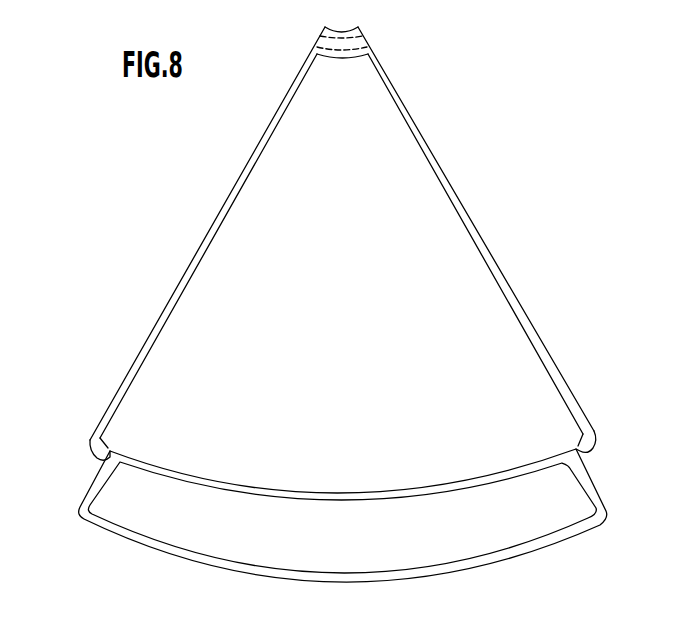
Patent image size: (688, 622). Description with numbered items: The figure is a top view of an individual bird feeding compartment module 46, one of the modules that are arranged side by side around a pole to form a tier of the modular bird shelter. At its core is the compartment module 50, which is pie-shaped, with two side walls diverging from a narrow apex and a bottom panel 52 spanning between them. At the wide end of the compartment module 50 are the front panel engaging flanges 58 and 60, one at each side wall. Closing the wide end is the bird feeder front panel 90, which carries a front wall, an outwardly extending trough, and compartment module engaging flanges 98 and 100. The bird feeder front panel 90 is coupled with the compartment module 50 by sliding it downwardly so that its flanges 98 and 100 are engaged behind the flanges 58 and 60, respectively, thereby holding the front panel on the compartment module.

The bird feeding compartment module 46 is at (519, 168).
The compartment module 50 is at (521, 292).
The bottom panel 52 is at (347, 293).
The front panel engaging flange 58 is at (596, 455).
The front panel engaging flange 60 is at (96, 452).
The bird feeder front panel 90 is at (107, 548).
The compartment module engaging flange 98 is at (577, 446).
The compartment module engaging flange 100 is at (113, 441).